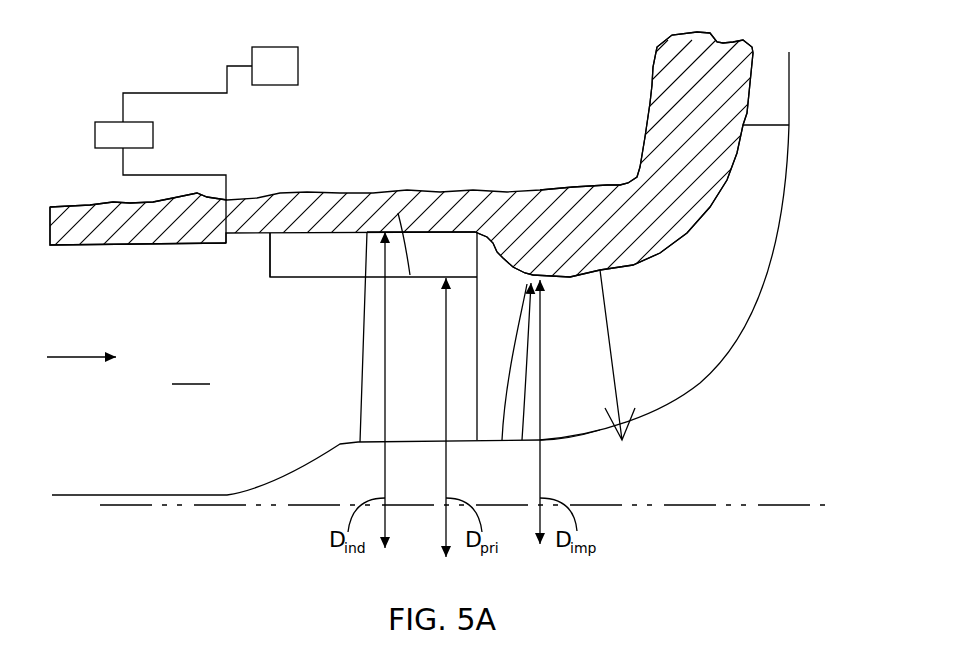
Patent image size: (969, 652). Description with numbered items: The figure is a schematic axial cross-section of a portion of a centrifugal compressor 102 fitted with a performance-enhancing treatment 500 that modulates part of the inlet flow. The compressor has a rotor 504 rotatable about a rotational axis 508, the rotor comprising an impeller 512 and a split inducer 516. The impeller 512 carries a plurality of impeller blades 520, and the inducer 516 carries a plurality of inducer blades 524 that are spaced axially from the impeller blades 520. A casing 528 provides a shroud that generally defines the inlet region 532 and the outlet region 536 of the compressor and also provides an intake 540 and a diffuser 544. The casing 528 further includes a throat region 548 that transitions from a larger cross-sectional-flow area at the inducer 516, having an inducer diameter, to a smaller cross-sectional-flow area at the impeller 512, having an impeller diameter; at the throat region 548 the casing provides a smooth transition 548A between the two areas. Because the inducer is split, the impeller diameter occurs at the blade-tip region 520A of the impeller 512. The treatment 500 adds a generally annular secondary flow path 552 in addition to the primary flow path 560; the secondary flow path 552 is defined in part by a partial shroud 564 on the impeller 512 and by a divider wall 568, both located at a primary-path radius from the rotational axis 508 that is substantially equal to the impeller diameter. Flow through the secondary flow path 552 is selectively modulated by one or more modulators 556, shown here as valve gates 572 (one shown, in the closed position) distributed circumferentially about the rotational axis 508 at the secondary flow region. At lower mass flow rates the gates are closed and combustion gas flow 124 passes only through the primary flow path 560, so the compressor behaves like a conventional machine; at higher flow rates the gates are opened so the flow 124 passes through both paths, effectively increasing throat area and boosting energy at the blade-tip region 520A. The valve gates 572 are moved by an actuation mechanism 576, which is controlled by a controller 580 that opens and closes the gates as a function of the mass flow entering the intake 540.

The centrifugal compressor 102 is at (583, 116).
The combustion gas flow 124 is at (75, 362).
The treatment 500 is at (320, 206).
The rotor 504 is at (298, 469).
The rotational axis 508 is at (795, 508).
The impeller 512 is at (633, 279).
The split inducer 516 is at (407, 221).
The impeller blades 520 is at (621, 374).
The blade-tip region 520A is at (504, 378).
The inducer blades 524 is at (460, 412).
The casing 528 is at (97, 208).
The inlet region 532 is at (340, 346).
The outlet region 536 is at (772, 114).
The intake 540 is at (192, 373).
The diffuser 544 is at (794, 62).
The throat region 548 is at (519, 257).
The smooth transition 548A is at (495, 245).
The secondary flow path 552 is at (438, 241).
The modulator 556 is at (261, 254).
The primary flow path 560 is at (420, 393).
The partial shroud 564 is at (382, 229).
The divider wall 568 is at (322, 279).
The valve gates 572 is at (268, 263).
The actuation mechanism 576 is at (108, 122).
The controller 580 is at (348, 56).